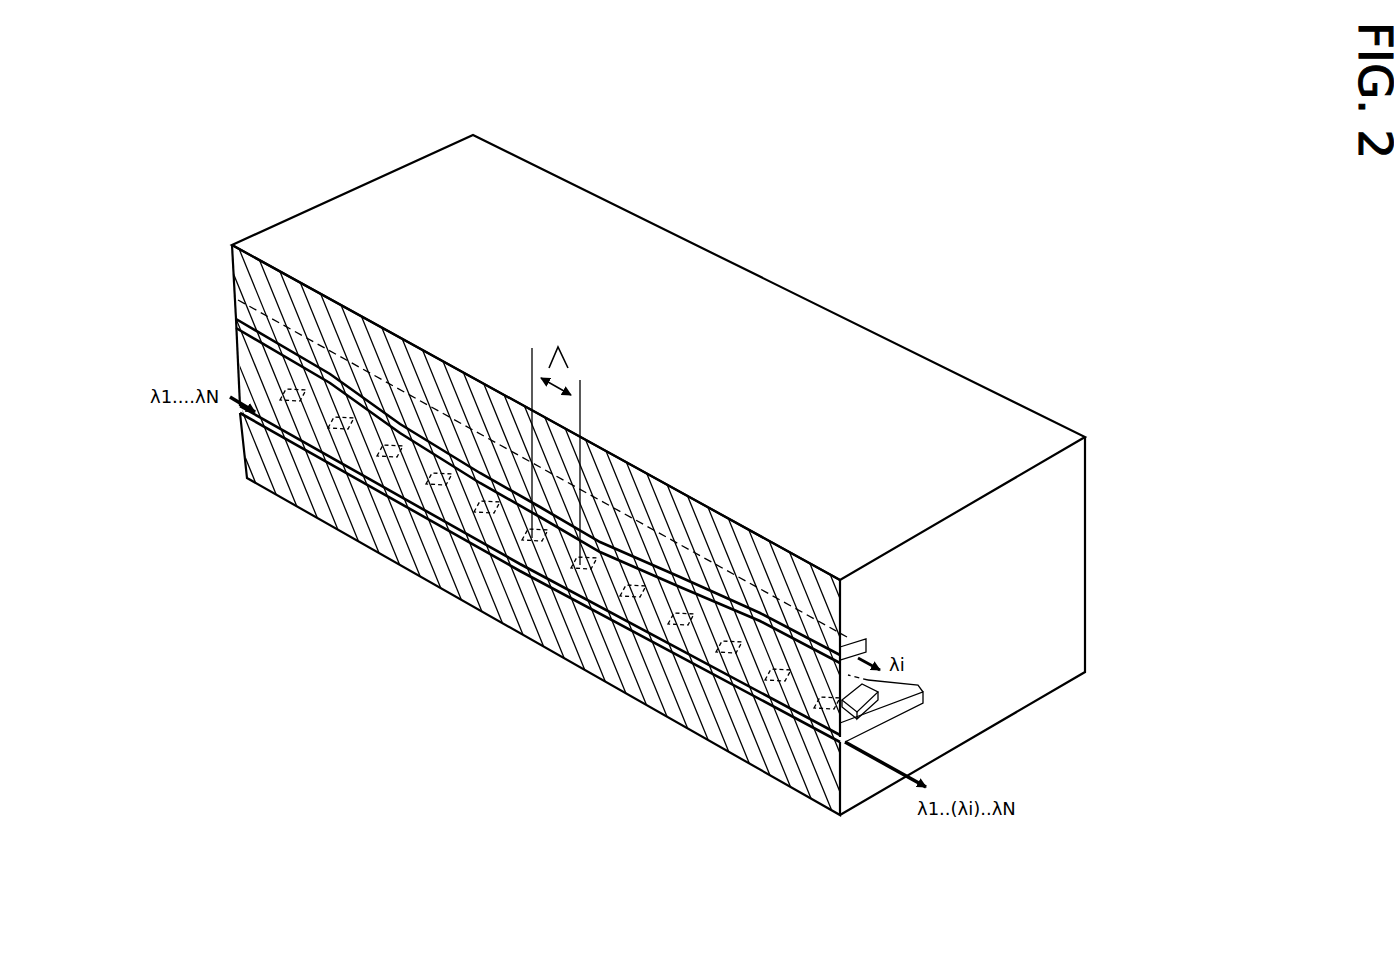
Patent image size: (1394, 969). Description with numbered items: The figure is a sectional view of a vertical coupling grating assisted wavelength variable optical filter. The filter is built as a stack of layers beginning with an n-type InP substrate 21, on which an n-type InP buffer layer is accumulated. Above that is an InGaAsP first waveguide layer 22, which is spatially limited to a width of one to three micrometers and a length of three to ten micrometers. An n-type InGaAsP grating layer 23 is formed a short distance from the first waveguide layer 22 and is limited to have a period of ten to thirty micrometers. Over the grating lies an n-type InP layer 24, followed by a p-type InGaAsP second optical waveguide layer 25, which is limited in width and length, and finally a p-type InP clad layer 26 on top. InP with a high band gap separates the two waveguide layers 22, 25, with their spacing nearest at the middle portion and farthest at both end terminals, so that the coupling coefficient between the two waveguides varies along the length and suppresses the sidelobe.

The n-type InP substrate 21 is at (255, 458).
The first waveguide layer 22 is at (812, 728).
The grating layer 23 is at (900, 677).
The n-type InP layer 24 is at (247, 365).
The second optical waveguide layer 25 is at (847, 640).
The p-type InP clad layer 26 is at (240, 272).